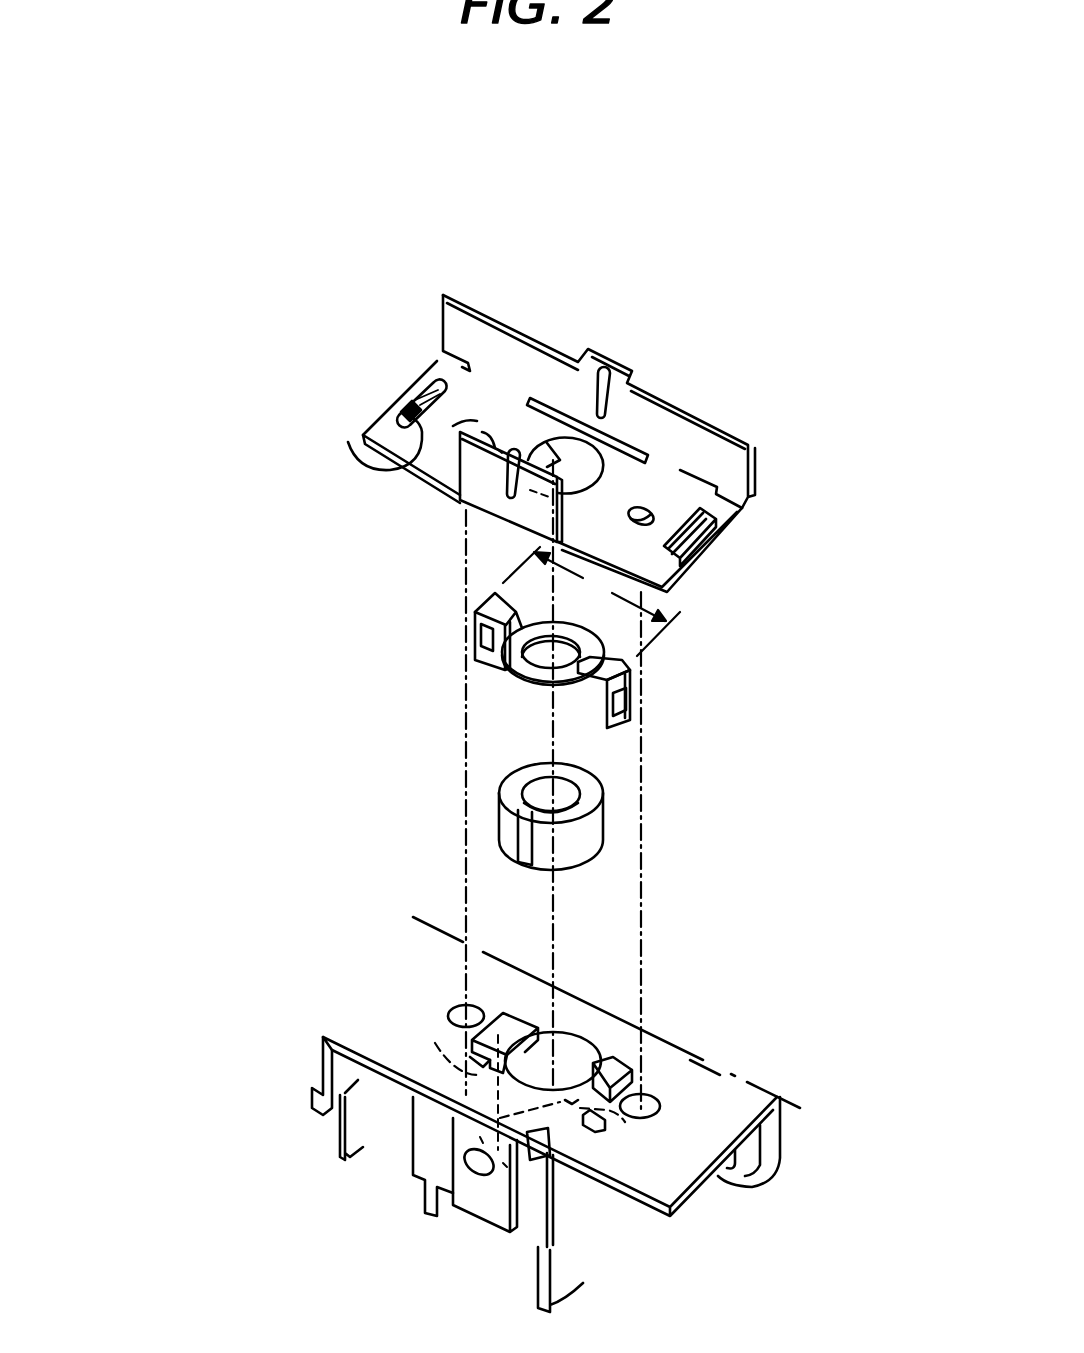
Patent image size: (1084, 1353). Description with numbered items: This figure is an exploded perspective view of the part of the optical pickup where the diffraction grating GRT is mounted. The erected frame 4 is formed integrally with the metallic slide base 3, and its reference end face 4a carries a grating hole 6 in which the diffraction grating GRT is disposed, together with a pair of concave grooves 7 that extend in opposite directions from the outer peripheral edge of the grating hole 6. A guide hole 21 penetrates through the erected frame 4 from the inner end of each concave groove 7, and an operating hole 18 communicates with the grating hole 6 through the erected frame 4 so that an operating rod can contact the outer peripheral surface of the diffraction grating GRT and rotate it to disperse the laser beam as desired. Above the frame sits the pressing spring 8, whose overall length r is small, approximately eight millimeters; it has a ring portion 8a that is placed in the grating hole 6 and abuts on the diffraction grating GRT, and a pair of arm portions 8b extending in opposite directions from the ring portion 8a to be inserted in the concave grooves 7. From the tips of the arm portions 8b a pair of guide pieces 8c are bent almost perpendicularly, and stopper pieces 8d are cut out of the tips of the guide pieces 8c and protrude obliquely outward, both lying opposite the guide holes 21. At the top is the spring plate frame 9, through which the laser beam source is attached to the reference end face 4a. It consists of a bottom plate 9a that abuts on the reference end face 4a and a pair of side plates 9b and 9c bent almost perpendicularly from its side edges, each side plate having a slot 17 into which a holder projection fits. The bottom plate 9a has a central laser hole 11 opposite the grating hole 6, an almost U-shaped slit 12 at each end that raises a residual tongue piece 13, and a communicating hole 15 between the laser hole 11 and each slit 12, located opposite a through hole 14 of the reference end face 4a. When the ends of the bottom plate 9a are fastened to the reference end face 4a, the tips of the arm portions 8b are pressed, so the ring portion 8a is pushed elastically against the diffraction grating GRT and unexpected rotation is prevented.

The slide base 3 is at (767, 1183).
The erected frame 4 is at (542, 1102).
The reference end face 4a is at (683, 1075).
The grating hole 6 is at (568, 1053).
The concave grooves 7 is at (603, 1073).
The pressing spring 8 is at (558, 678).
The ring portion 8a is at (535, 673).
The arm portions 8b is at (640, 637).
The guide pieces 8c is at (637, 688).
The stopper pieces 8d is at (614, 697).
The spring plate frame 9 is at (469, 434).
The bottom plate 9a is at (495, 393).
The side plate 9b is at (457, 335).
The side plate 9c is at (457, 489).
The laser hole 11 is at (593, 480).
The slit 12 is at (398, 412).
The tongue piece 13 is at (374, 437).
The through hole 14 is at (660, 1100).
The communicating hole 15 is at (630, 516).
The slot 17 is at (505, 498).
The operating hole 18 is at (478, 1175).
The guide hole 21 is at (618, 1122).
The diffraction grating GRT is at (603, 823).
The overall length r is at (591, 601).